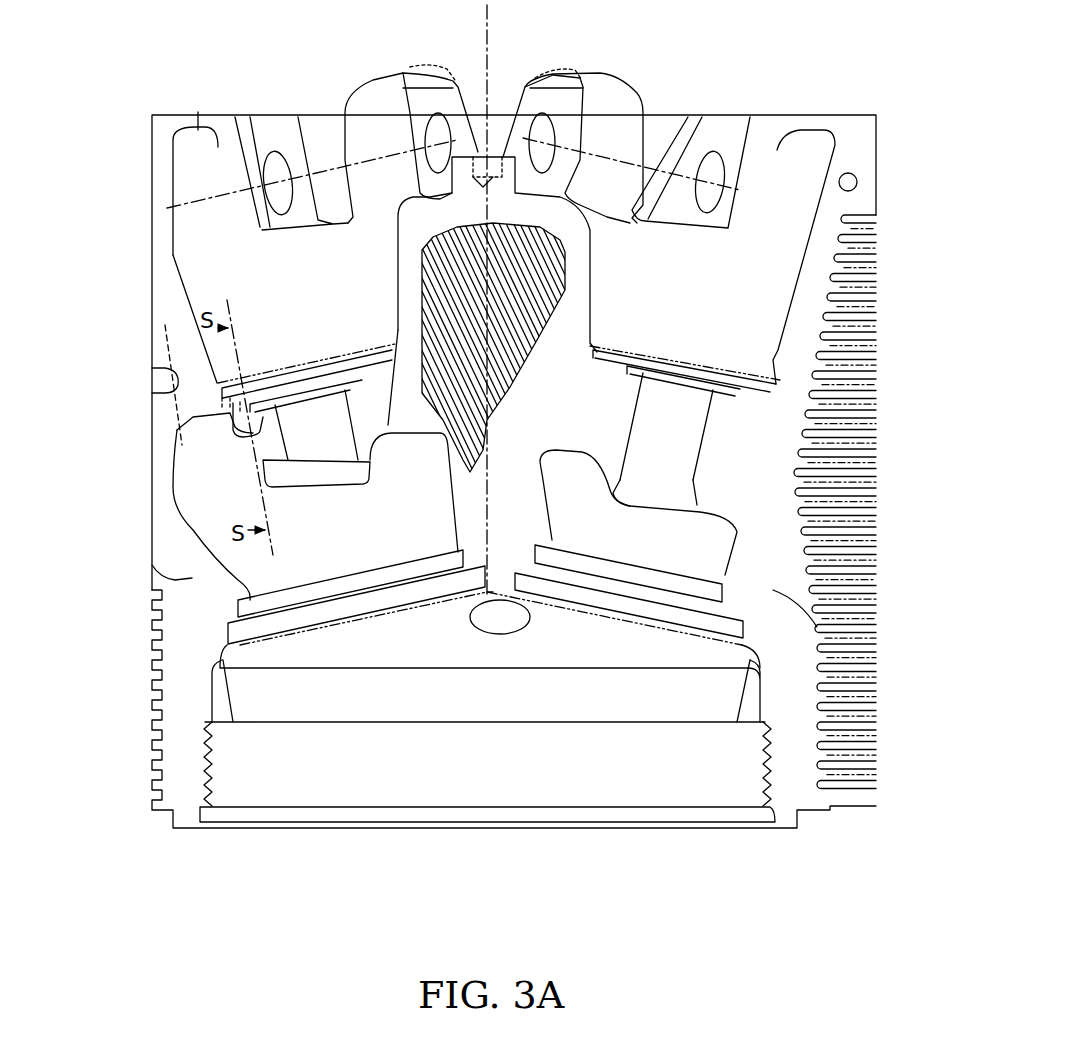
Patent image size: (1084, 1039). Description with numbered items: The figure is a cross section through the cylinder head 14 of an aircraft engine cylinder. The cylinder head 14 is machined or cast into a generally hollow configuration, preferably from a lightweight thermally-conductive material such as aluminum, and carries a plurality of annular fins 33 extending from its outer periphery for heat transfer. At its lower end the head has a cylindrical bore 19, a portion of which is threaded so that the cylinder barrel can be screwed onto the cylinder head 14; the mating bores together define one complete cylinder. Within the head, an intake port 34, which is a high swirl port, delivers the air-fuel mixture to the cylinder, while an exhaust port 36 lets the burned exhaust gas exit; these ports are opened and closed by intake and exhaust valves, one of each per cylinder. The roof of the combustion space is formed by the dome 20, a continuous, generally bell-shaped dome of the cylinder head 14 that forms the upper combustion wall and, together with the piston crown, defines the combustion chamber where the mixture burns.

The cylinder head 14 is at (106, 130).
The cylindrical bore 19 is at (218, 746).
The dome 20 is at (423, 636).
The annular fins 33 is at (877, 214).
The intake port 34 is at (230, 457).
The exhaust port 36 is at (746, 443).